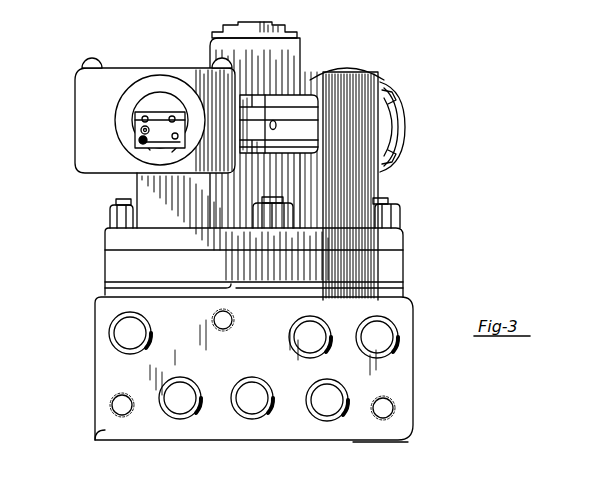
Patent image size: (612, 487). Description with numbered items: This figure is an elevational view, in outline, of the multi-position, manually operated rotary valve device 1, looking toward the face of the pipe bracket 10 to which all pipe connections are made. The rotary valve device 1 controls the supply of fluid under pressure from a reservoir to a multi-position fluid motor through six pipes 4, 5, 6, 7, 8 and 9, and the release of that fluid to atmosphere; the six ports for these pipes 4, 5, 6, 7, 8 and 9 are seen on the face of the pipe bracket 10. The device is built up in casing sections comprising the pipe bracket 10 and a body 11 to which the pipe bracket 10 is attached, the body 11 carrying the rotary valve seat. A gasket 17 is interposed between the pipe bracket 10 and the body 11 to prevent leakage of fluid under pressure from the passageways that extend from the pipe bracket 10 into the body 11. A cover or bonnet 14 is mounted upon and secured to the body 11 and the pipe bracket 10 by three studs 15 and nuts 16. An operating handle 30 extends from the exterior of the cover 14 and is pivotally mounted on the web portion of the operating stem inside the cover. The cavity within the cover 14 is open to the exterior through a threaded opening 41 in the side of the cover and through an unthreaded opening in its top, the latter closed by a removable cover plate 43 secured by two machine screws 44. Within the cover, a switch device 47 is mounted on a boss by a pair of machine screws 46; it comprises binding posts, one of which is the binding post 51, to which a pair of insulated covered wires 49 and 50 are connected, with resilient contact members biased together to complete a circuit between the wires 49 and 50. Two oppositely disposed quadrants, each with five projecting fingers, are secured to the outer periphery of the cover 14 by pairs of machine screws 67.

The rotary valve device 1 is at (410, 247).
The pipe 4 is at (120, 342).
The pipe 5 is at (177, 420).
The pipe 6 is at (246, 420).
The pipe 7 is at (306, 358).
The pipe 8 is at (320, 421).
The pipe 9 is at (392, 348).
The pipe bracket 10 is at (395, 378).
The body 11 is at (405, 268).
The cover 14 is at (365, 190).
The stud 15 is at (116, 201).
The nut 16 is at (110, 218).
The gasket 17 is at (405, 290).
The operating handle 30 is at (392, 127).
The threaded opening 41 is at (155, 105).
The cover plate 43 is at (130, 68).
The machine screw 44 is at (92, 62).
The machine screw 46 is at (141, 119).
The switch device 47 is at (148, 116).
The insulated covered wire 49 is at (141, 142).
The insulated covered wire 50 is at (190, 142).
The binding post 51 is at (141, 131).
The machine screw 67 is at (394, 95).